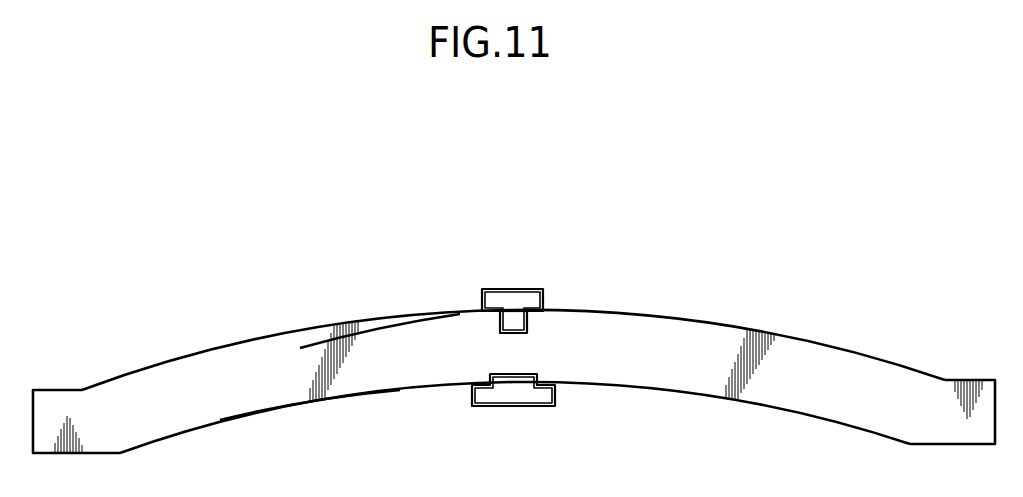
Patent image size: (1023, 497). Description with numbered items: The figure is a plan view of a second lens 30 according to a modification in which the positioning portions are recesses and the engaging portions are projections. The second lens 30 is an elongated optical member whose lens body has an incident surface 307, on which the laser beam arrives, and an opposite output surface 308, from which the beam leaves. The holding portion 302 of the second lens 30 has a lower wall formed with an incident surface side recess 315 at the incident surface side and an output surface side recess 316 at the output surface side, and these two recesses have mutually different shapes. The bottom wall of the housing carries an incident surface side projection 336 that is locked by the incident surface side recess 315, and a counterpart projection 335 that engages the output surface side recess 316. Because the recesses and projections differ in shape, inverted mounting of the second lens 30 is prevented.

The second lens 30 is at (188, 247).
The holding portion 302 is at (313, 322).
The output surface 308 is at (378, 314).
The incident surface 307 is at (292, 404).
The incident surface side projection 336 is at (513, 292).
The output surface side recess 316 is at (515, 336).
The second recess 335 is at (512, 401).
The incident surface side recess 315 is at (525, 373).